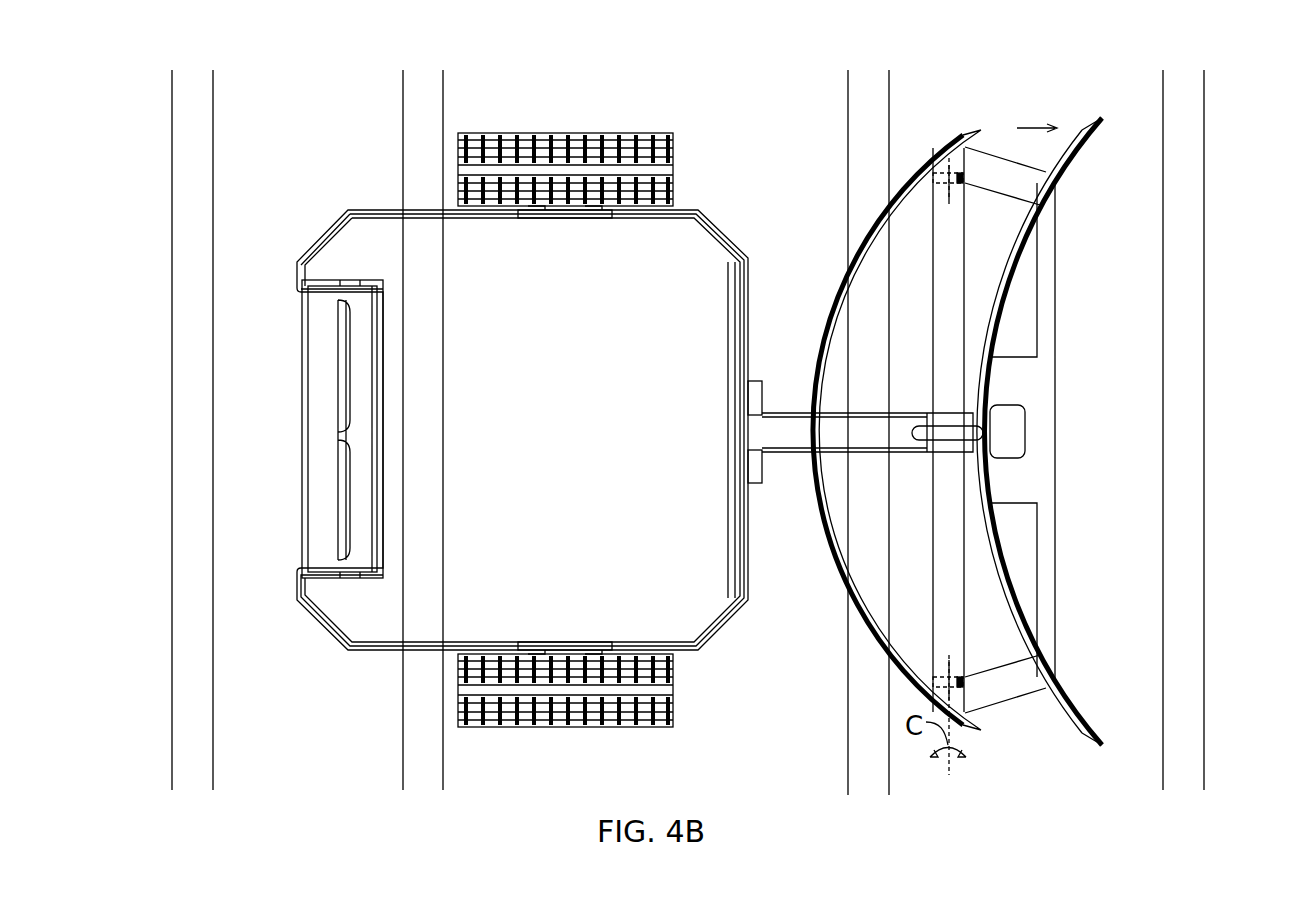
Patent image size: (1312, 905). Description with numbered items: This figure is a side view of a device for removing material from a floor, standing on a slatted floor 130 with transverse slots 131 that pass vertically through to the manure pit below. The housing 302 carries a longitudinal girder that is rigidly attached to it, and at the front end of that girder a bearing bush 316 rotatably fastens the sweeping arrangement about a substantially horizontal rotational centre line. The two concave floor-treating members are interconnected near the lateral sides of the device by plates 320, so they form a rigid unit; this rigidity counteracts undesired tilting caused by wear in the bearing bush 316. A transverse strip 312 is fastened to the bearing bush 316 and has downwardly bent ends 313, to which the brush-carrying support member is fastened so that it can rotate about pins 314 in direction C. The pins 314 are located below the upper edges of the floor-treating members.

The floor 130 is at (156, 461).
The transverse slots 131 is at (190, 83).
The housing 302 is at (590, 452).
The transverse strip 312 is at (944, 234).
The downwardly bent ends 313 is at (957, 178).
The pins 314 is at (949, 186).
The bearing bush 316 is at (951, 419).
The plates 320 is at (1005, 176).